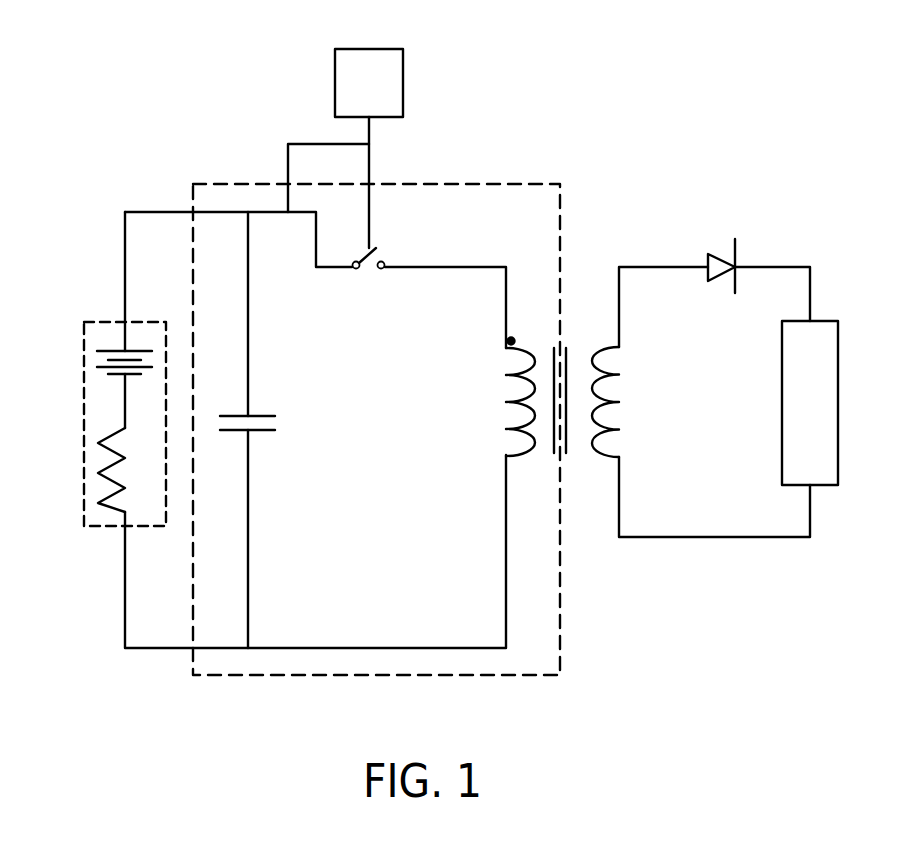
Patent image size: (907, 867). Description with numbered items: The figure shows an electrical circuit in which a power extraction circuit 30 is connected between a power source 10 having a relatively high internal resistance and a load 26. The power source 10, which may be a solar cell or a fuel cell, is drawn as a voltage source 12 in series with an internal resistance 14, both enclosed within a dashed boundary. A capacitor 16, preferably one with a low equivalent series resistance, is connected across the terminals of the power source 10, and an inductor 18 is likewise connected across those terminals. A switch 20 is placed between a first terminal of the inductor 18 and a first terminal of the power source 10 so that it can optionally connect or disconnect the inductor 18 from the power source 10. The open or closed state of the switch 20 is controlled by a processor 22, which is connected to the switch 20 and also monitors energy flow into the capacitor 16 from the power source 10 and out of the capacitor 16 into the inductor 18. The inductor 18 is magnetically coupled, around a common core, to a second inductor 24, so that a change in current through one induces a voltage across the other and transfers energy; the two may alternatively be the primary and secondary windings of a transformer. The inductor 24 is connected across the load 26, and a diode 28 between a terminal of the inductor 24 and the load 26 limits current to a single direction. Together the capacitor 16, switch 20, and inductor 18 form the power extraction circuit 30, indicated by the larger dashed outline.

The power source 10 is at (104, 422).
The voltage source 12 is at (105, 362).
The internal resistance 14 is at (110, 507).
The capacitor 16 is at (222, 432).
The inductor 18 is at (520, 455).
The switch 20 is at (386, 236).
The processor 22 is at (390, 48).
The inductor 24 is at (622, 370).
The load 26 is at (830, 348).
The diode 28 is at (737, 233).
The power extraction circuit 30 is at (553, 206).